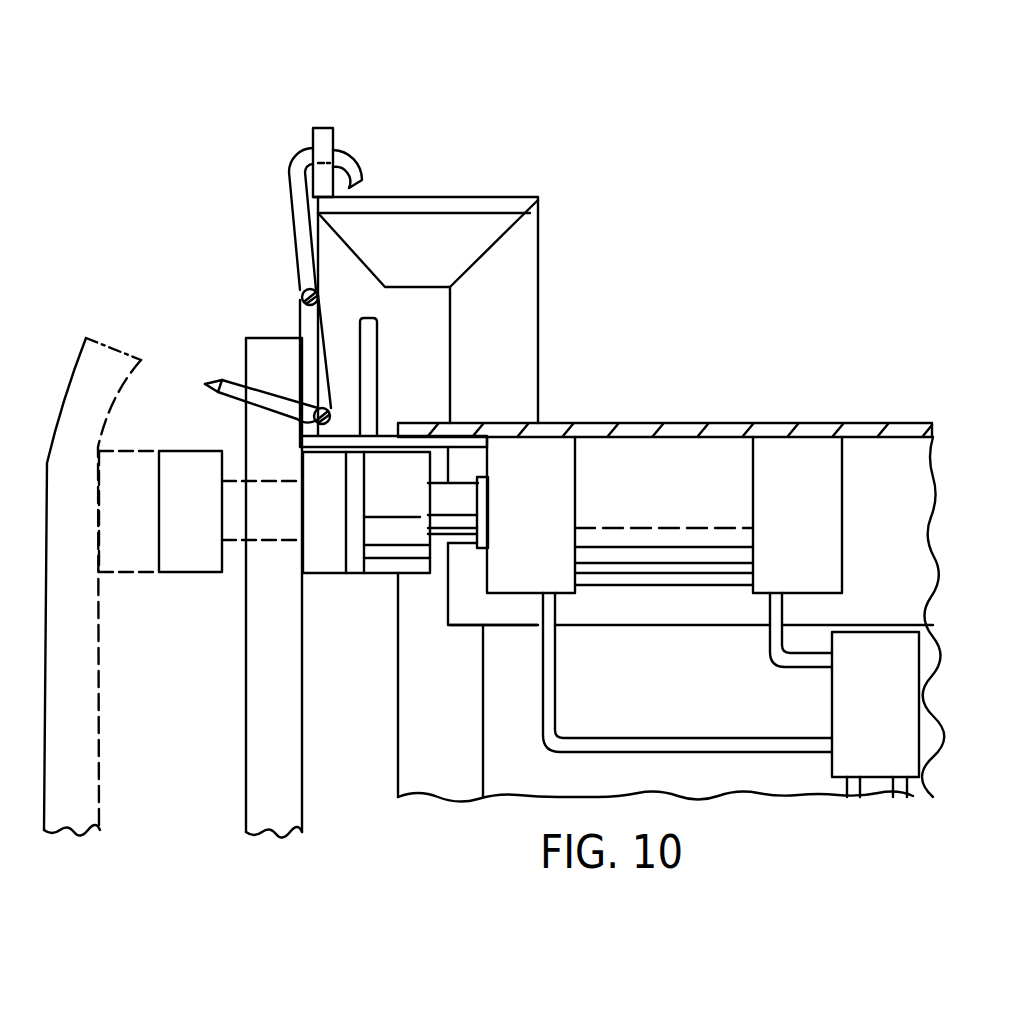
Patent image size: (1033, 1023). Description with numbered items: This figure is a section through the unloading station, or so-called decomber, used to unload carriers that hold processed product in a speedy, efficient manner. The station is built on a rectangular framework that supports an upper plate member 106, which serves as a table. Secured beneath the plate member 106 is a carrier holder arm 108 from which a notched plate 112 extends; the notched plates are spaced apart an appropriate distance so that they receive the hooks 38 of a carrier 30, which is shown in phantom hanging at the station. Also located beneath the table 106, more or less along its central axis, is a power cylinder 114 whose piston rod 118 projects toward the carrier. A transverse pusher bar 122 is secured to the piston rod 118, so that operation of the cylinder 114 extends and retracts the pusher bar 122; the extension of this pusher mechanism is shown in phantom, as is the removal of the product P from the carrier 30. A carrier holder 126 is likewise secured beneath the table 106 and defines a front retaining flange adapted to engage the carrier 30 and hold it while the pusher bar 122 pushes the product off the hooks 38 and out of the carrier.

The carrier 30 is at (253, 250).
The hooks 38 is at (303, 155).
The upper plate member 106 is at (863, 423).
The carrier holder arm 108 is at (490, 293).
The notched plate 112 is at (324, 142).
The power cylinder 114 is at (700, 477).
The piston rod 118 is at (444, 528).
The pusher bar 122 is at (323, 530).
The carrier holder 126 is at (377, 370).
The plate P is at (262, 712).